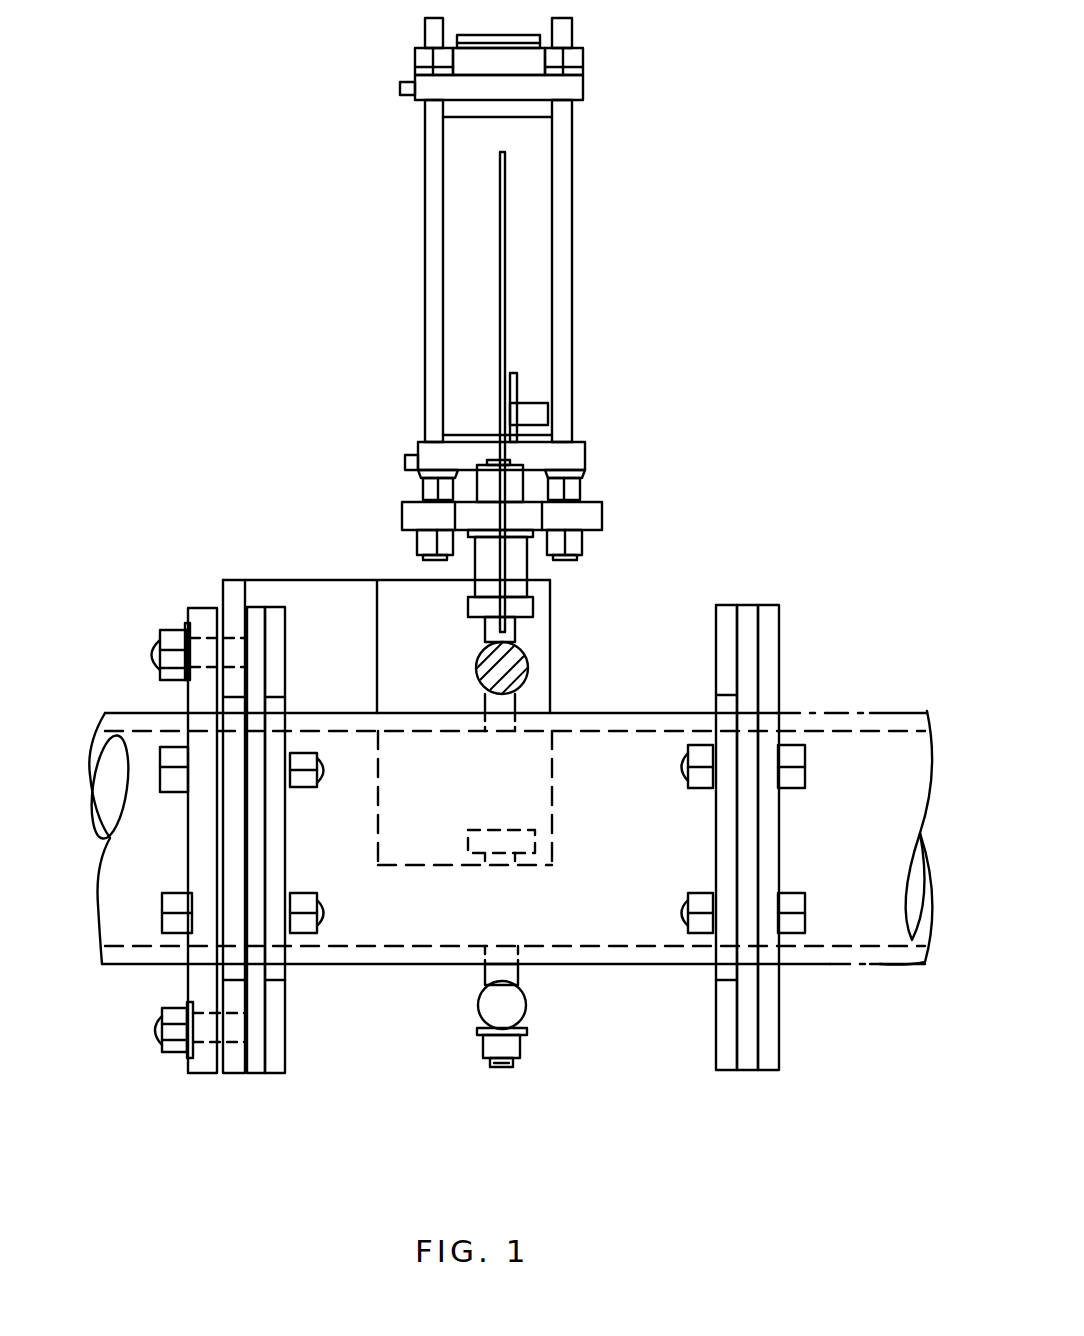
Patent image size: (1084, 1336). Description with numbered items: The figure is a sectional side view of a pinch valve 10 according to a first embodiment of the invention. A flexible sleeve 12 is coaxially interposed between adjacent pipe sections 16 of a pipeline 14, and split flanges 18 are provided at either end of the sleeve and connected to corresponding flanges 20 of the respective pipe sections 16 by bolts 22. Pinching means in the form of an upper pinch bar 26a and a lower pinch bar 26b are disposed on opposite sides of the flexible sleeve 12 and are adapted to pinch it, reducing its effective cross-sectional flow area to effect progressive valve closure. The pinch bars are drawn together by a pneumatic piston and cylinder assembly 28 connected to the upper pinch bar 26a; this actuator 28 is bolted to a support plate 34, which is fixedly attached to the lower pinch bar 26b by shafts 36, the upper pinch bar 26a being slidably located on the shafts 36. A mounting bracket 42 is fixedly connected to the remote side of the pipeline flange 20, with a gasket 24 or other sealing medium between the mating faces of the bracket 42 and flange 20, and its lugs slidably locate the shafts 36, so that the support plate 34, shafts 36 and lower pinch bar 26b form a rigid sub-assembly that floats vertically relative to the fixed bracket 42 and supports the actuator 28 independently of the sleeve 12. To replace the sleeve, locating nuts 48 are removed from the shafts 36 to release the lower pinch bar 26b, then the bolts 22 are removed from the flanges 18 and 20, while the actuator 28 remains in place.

The pinch valve 10 is at (320, 455).
The flexible sleeve 12 is at (258, 1060).
The pipe 14 is at (113, 778).
The pipe sections 16 is at (140, 718).
The split flanges 18 is at (285, 1030).
The flanges 20 is at (200, 1058).
The bolts 22 is at (175, 920).
The gasket 24 is at (228, 1068).
The upper pinch bar 26a is at (520, 668).
The lower pinch bar 26b is at (518, 1003).
The pneumatic piston and cylinder assembly 28 is at (543, 212).
The support plate 34 is at (595, 512).
The shafts 36 is at (500, 1070).
The mounting bracket 42 is at (313, 598).
The locating nuts 48 is at (518, 1047).